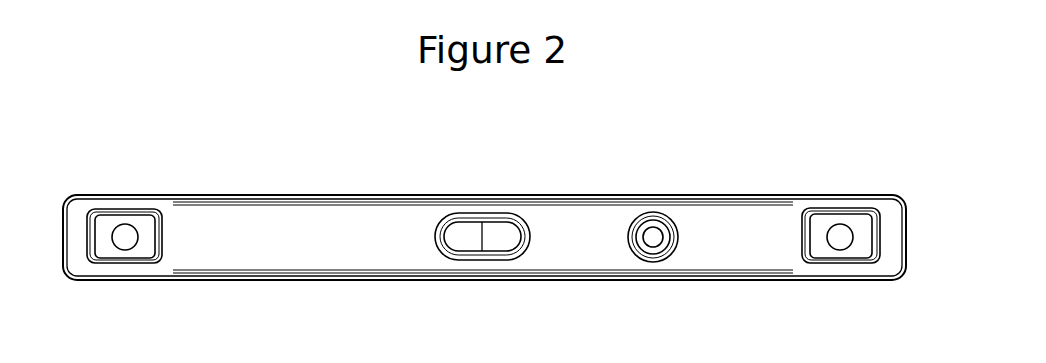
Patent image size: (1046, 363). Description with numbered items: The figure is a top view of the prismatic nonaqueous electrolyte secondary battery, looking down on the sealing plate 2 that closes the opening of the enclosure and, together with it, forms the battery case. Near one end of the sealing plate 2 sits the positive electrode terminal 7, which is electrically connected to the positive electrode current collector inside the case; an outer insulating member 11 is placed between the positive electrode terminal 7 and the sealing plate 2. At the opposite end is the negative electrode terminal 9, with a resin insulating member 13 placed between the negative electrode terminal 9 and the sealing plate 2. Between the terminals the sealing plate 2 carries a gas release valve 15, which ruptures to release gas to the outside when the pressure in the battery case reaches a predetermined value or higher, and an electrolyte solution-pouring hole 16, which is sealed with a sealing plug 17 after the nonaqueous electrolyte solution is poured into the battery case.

The sealing plate 2 is at (578, 247).
The positive electrode terminal 7 is at (840, 250).
The negative electrode terminal 9 is at (125, 250).
The outer insulating member 11 is at (840, 213).
The insulating member 13 is at (133, 216).
The gas release valve 15 is at (467, 243).
The electrolyte solution-pouring hole 16 is at (653, 262).
The sealing plug 17 is at (653, 237).